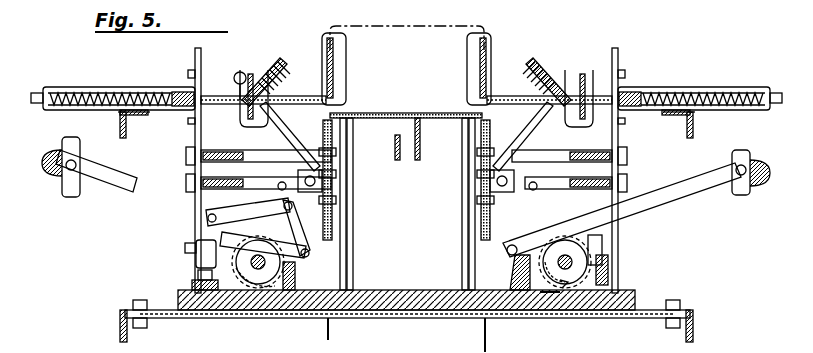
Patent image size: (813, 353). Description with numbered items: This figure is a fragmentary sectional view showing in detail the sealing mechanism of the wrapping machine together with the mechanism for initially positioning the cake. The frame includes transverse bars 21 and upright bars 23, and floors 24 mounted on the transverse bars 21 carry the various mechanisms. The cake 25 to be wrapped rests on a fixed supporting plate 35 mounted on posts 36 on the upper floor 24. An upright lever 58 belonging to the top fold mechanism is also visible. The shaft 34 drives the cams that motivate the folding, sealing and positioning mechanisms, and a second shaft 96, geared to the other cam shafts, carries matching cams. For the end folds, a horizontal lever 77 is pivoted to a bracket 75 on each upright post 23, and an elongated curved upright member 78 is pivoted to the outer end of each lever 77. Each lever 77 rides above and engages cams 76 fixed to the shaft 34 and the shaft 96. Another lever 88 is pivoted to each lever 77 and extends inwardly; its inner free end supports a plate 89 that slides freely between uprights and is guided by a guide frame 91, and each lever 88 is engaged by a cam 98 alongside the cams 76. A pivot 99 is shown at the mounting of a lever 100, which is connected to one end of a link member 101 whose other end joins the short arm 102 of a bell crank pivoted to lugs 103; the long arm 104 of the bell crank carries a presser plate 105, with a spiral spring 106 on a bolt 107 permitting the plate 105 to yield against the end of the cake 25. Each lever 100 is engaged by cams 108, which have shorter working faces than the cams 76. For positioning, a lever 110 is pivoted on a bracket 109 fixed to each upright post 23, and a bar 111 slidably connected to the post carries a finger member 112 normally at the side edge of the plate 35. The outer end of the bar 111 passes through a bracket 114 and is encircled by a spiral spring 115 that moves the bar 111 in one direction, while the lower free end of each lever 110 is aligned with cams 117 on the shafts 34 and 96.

The transverse bars 21 is at (122, 119).
The upright bars 23 is at (195, 61).
The floors 24 is at (415, 311).
The cake 25 is at (398, 22).
The shaft 34 is at (567, 269).
The fixed supporting plate 35 is at (386, 112).
The posts 36 is at (347, 148).
The upright lever 58 is at (417, 161).
The bracket 75 is at (590, 256).
The cams 76 is at (606, 273).
The horizontal lever 77 is at (110, 191).
The elongated curved upright member 78 is at (70, 198).
The lever 88 is at (353, 258).
The plate 89 is at (324, 118).
The guide frame 91 is at (490, 183).
The shaft 96 is at (240, 311).
The cam 98 is at (512, 293).
The pivot 99 is at (206, 217).
The lever 100 is at (196, 249).
The link member 101 is at (283, 241).
The short arm 102 is at (300, 225).
The lugs 103 is at (322, 184).
The long arm 104 is at (280, 97).
The presser plate 105 is at (282, 65).
The spiral spring 106 is at (260, 85).
The bolt 107 is at (236, 96).
The cams 108 is at (288, 291).
The bracket 109 is at (205, 176).
The lever 110 is at (242, 121).
The bar 111 is at (175, 95).
The finger member 112 is at (336, 59).
The bracket 114 is at (48, 88).
The spiral spring 115 is at (82, 90).
The cams 117 is at (198, 276).